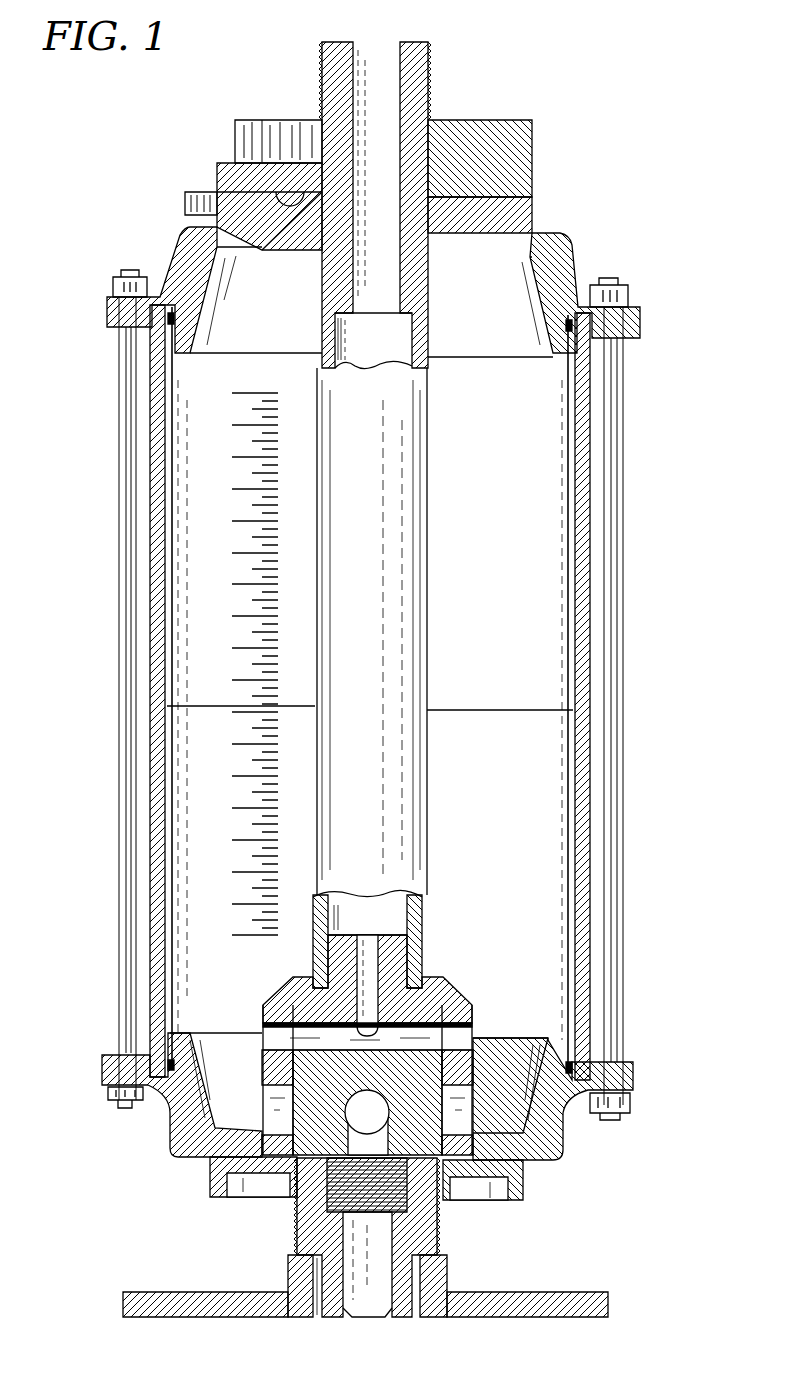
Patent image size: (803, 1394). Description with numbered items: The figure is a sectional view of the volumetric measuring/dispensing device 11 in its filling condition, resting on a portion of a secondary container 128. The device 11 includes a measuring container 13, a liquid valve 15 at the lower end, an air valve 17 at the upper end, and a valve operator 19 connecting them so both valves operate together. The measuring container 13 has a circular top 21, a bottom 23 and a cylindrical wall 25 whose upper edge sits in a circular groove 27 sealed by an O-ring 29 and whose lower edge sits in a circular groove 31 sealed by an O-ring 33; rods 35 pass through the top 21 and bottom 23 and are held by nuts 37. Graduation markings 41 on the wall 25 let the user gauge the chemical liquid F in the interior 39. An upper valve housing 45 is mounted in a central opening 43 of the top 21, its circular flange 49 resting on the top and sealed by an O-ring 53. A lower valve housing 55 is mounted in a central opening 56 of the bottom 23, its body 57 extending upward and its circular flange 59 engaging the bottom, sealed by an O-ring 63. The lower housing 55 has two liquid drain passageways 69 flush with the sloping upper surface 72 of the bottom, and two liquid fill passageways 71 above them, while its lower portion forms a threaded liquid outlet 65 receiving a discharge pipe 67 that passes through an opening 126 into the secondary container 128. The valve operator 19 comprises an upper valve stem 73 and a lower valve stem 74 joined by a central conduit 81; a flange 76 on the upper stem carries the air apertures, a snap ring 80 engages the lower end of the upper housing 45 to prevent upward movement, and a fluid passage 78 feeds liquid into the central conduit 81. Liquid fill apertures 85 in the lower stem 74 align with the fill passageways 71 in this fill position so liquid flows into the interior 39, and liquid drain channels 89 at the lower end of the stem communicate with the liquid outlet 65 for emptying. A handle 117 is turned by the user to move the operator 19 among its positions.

The volumetric measuring/dispensing device 11 is at (624, 64).
The measuring container 13 is at (590, 604).
The liquid valve 15 is at (514, 958).
The air valve 17 is at (548, 190).
The valve operator 19 is at (468, 672).
The circular top 21 is at (190, 270).
The bottom 23 is at (182, 1147).
The cylindrical wall 25 is at (160, 585).
The circular groove 27 is at (158, 325).
The O-ring 29 is at (586, 327).
The circular groove 31 is at (580, 1047).
The O-ring 33 is at (166, 1062).
The rods 35 is at (125, 455).
The nuts 37 is at (113, 287).
The interior 39 is at (500, 560).
The graduation markings 41 is at (272, 866).
The central opening 43 is at (270, 252).
The upper valve housing 45 is at (532, 212).
The circular flange 49 is at (222, 175).
The O-ring 53 is at (485, 262).
The lower valve housing 55 is at (210, 1182).
The central opening 56 is at (465, 1136).
The body 57 is at (290, 982).
The circular flange 59 is at (520, 1180).
The O-ring 63 is at (495, 1200).
The liquid outlet 65 is at (300, 1205).
The discharge pipe 67 is at (408, 1320).
The liquid drain passageways 69 is at (270, 1094).
The liquid fill passageways 71 is at (282, 1026).
The upper surface 72 is at (550, 1150).
The upper valve stem 73 is at (525, 155).
The lower valve stem 74 is at (422, 947).
The flange 76 is at (237, 132).
The fluid passage 78 is at (388, 82).
The snap ring 80 is at (425, 272).
The central conduit 81 is at (361, 728).
The liquid fill apertures 85 is at (422, 988).
The liquid drain channels 89 is at (375, 1104).
The handle 117 is at (290, 128).
The opening 126 is at (308, 1320).
The secondary container 128 is at (583, 1300).
The chemical liquid F is at (507, 710).